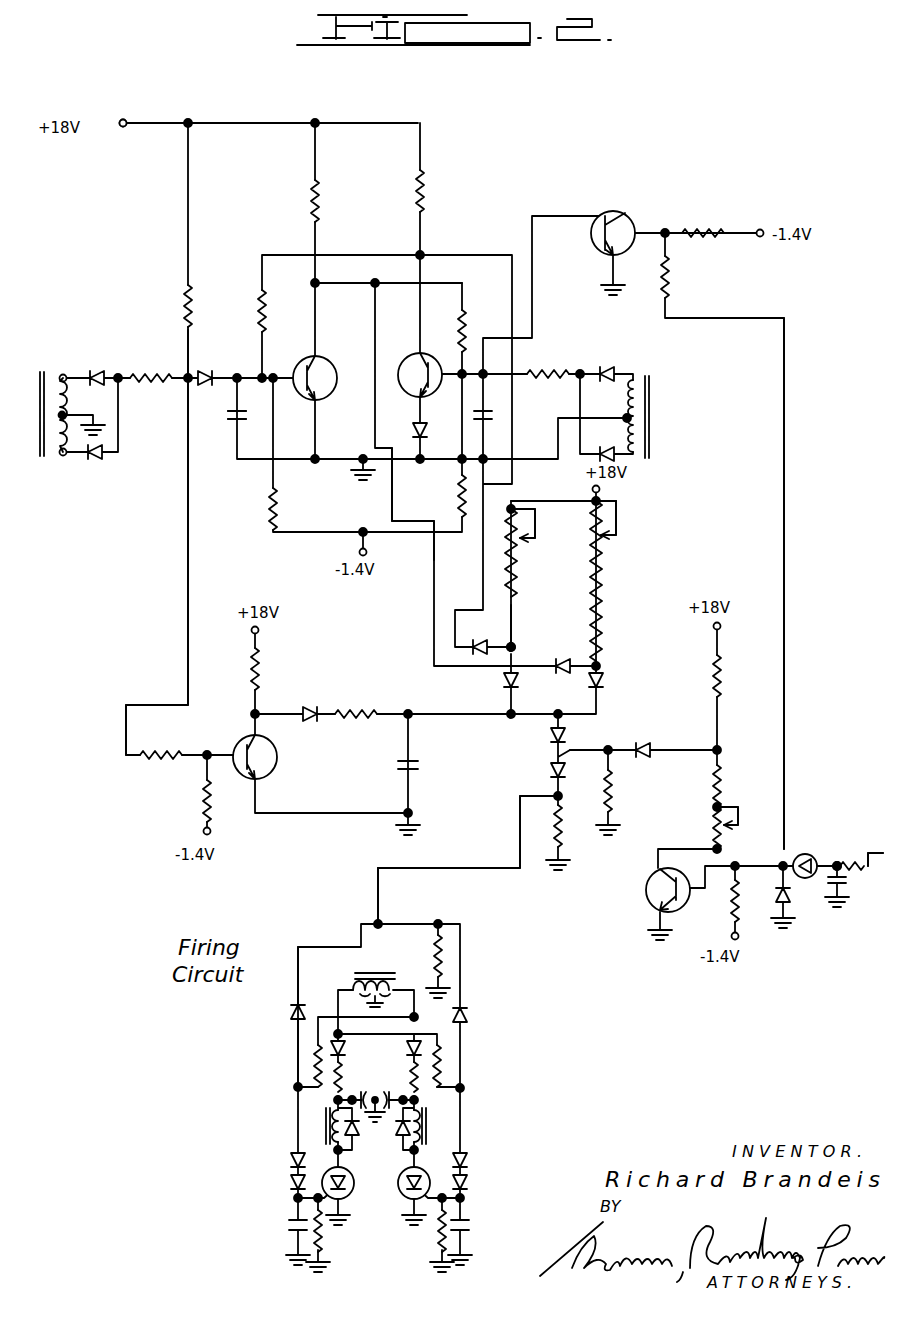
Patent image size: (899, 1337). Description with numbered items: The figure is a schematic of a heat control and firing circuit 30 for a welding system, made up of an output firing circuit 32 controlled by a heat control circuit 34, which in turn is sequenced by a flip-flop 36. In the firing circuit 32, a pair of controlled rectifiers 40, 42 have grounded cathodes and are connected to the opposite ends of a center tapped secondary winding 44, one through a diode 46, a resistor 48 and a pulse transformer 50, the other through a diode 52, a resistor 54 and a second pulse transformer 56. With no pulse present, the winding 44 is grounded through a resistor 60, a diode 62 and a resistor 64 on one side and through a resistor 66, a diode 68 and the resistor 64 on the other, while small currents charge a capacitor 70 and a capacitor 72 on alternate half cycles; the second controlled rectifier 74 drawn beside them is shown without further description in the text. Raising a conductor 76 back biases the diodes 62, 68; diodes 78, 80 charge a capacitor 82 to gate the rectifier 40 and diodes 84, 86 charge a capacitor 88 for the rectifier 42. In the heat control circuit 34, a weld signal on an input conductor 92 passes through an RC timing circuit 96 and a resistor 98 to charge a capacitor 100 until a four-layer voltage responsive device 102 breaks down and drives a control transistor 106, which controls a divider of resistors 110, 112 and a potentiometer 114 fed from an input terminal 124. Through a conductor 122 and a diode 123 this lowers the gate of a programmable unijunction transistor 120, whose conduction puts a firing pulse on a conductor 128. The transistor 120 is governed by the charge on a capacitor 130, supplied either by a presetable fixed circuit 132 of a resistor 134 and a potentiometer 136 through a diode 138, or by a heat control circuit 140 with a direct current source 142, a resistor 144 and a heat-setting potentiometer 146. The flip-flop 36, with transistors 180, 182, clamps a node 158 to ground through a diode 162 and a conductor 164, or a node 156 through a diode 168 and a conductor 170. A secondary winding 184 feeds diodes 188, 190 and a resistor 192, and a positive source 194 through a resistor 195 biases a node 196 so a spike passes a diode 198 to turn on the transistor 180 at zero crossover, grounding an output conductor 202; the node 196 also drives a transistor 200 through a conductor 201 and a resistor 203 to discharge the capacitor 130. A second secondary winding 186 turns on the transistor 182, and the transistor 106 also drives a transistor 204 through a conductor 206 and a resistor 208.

The positive source of potential 194 is at (128, 123).
The resistor 195 is at (180, 294).
The conductor 201 is at (187, 545).
The secondary winding 184 is at (58, 373).
The diode 188 is at (97, 370).
The diode 190 is at (92, 456).
The resistor 192 is at (148, 383).
The node 196 is at (196, 372).
The diode 198 is at (209, 416).
The transistor 180 is at (325, 388).
The transistor 182 is at (400, 362).
The output conductor 202 is at (345, 283).
The flip-flop 36 is at (460, 224).
The transistor 204 is at (620, 211).
The resistor 208 is at (672, 290).
The conductor 170 is at (513, 365).
The second secondary winding 186 is at (632, 377).
The heat control and firing circuit 30 is at (261, 535).
The heat control circuit 34 is at (132, 598).
The conductor 164 is at (430, 595).
The source of direct current potential 142 is at (600, 489).
The heat control circuit 140 is at (647, 538).
The potentiometer 136 is at (510, 538).
The presetable fixed circuit 132 is at (497, 575).
The resistor 134 is at (515, 608).
The resistor 144 is at (597, 583).
The potentiometer 146 is at (595, 537).
The node 156 is at (513, 647).
The diode 162 is at (563, 660).
The node 158 is at (598, 666).
The diode 168 is at (477, 655).
The diode 138 is at (514, 678).
The transistor 200 is at (275, 773).
The resistor 203 is at (170, 770).
The capacitor 130 is at (418, 760).
The programmable unijunction transistor 120 is at (550, 768).
The diode 123 is at (644, 742).
The conductor 122 is at (669, 760).
The input terminal 124 is at (720, 628).
The resistor 110 is at (720, 695).
The resistor 112 is at (721, 788).
The potentiometer 114 is at (717, 827).
The control transistor 106 is at (645, 890).
The four-layer voltage responsive device 102 is at (793, 858).
The RC timing circuit 96 is at (842, 843).
The input conductor 92 is at (872, 848).
The resistor 98 is at (845, 883).
The capacitor 100 is at (813, 913).
The conductor 206 is at (784, 715).
The conductor 128 is at (490, 868).
The conductor 76 is at (382, 924).
The resistor 64 is at (444, 958).
The center tapped secondary winding 44 is at (350, 988).
The diode 62 is at (287, 1014).
The diode 68 is at (468, 1019).
The resistor 60 is at (310, 1055).
The diode 46 is at (345, 1048).
The diode 52 is at (427, 1030).
The resistor 66 is at (443, 1058).
The resistor 54 is at (431, 1084).
The resistor 48 is at (315, 1086).
The capacitor 70 is at (334, 1110).
The capacitor 72 is at (402, 1118).
The pulse transformer 50 is at (320, 1132).
The second pulse transformer 56 is at (431, 1103).
The controlled rectifier 42 is at (446, 1150).
The controlled rectifier 40 is at (348, 1196).
The silicon controlled rectifier 74 is at (414, 1183).
The diode 78 is at (287, 1158).
The diode 80 is at (287, 1186).
The capacitor 82 is at (287, 1225).
The diode 84 is at (466, 1162).
The diode 86 is at (466, 1192).
The capacitor 88 is at (466, 1227).
The output firing circuit 32 is at (252, 1094).